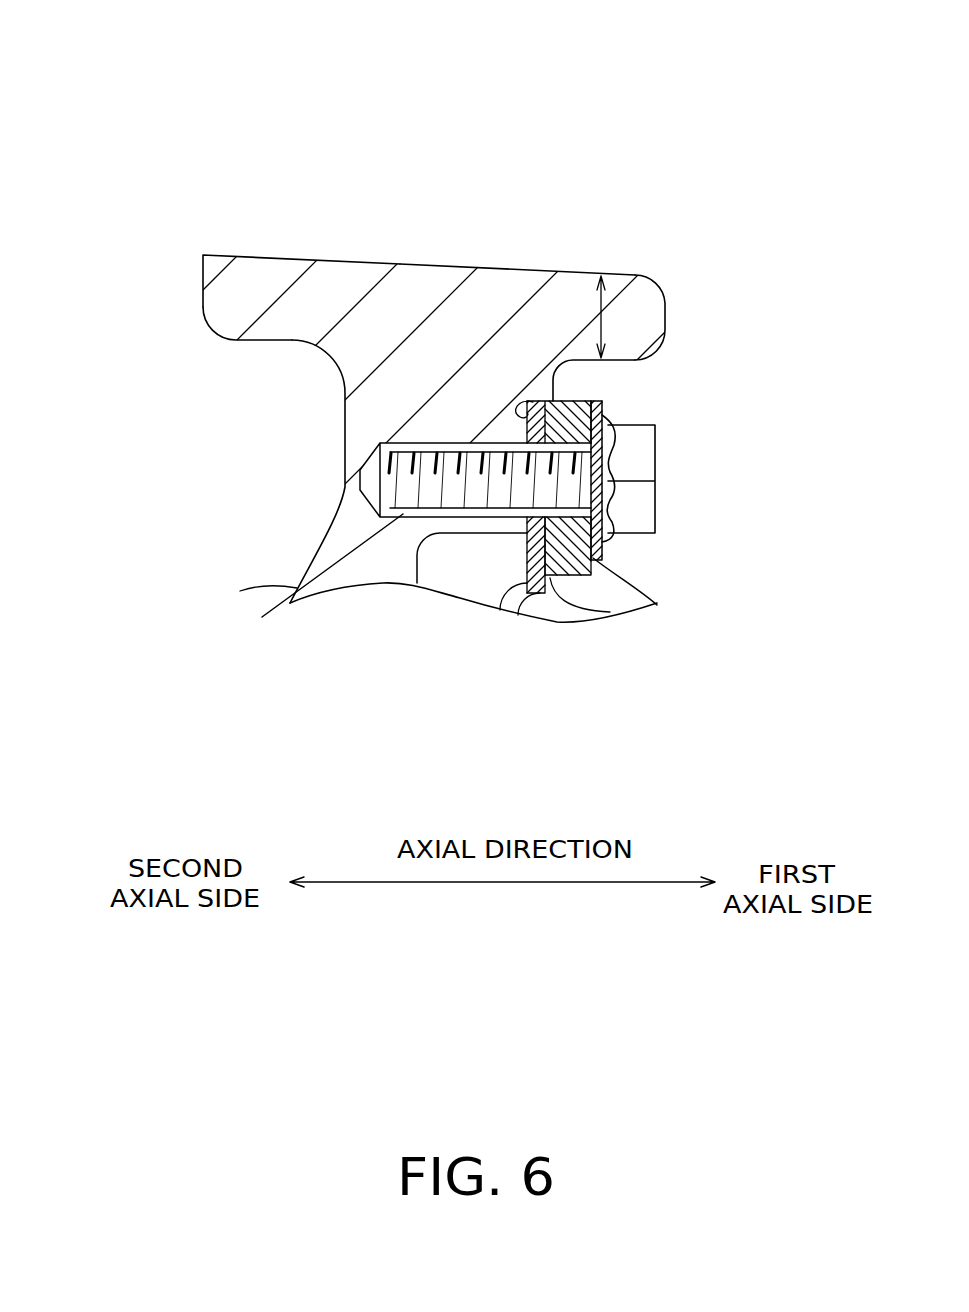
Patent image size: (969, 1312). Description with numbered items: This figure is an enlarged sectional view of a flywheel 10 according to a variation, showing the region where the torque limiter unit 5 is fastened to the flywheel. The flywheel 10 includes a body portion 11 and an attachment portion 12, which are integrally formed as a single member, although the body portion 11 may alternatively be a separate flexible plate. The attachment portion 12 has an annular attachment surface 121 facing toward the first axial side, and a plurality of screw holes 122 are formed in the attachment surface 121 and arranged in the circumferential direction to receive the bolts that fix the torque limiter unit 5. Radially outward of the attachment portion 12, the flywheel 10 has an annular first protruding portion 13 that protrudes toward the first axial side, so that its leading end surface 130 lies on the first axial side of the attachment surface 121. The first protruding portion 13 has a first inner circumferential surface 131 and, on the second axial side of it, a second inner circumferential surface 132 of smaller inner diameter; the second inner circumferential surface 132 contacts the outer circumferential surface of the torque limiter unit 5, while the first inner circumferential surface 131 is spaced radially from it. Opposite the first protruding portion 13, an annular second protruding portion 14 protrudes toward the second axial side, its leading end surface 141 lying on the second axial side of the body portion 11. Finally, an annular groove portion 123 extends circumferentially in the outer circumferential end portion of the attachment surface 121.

The flywheel 10 is at (383, 181).
The second protruding portion 14 is at (228, 241).
The leading end surface 141 is at (203, 277).
The first protruding portion 13 is at (628, 265).
The leading end surface 130 is at (667, 317).
The first inner circumferential surface 131 is at (617, 361).
The second inner circumferential surface 132 is at (548, 413).
The groove portion 123 is at (536, 398).
The torque limiter unit 5 is at (583, 542).
The attachment portion 12 is at (472, 543).
The attachment surface 121 is at (545, 523).
The screw hole 122 is at (380, 517).
The body portion 11 is at (240, 591).